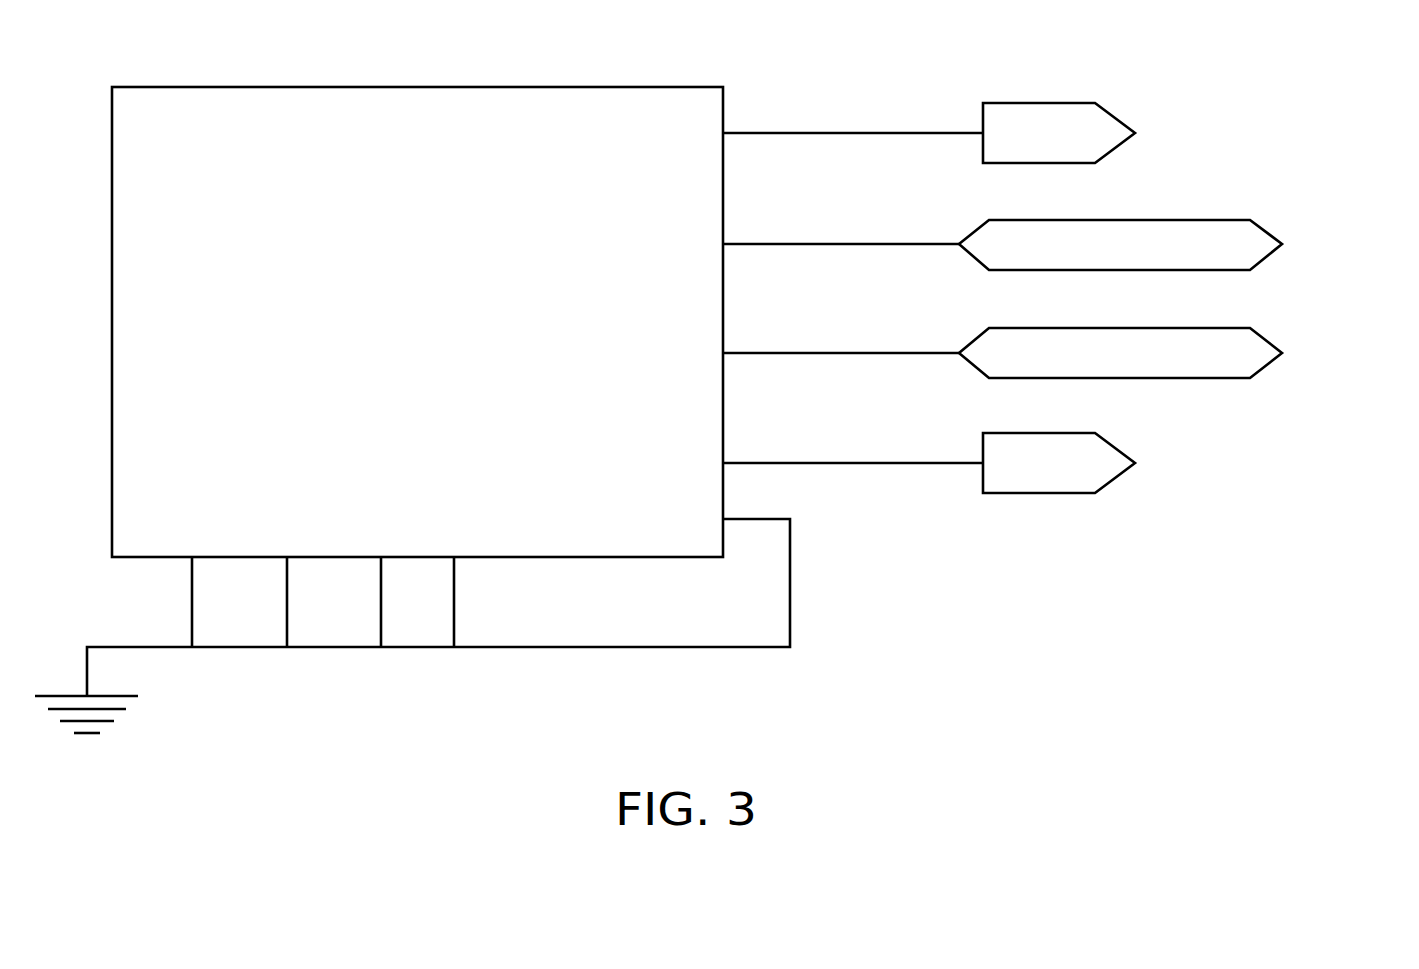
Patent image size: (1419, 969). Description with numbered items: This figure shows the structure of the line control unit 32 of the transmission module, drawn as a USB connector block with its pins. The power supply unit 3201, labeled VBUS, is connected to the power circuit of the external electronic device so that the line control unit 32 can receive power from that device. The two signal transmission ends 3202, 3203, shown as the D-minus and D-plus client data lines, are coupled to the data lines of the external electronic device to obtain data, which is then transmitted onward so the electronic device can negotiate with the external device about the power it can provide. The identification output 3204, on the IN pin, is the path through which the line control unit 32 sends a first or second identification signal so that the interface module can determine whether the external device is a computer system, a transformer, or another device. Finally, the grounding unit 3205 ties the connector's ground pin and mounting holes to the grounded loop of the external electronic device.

The line control unit 32 is at (748, 102).
The power supply unit 3201 is at (1102, 122).
The signal transmission end 3202 is at (1247, 233).
The signal transmission end 3203 is at (1247, 342).
The identification output 3204 is at (1100, 477).
The grounding unit 3205 is at (792, 582).